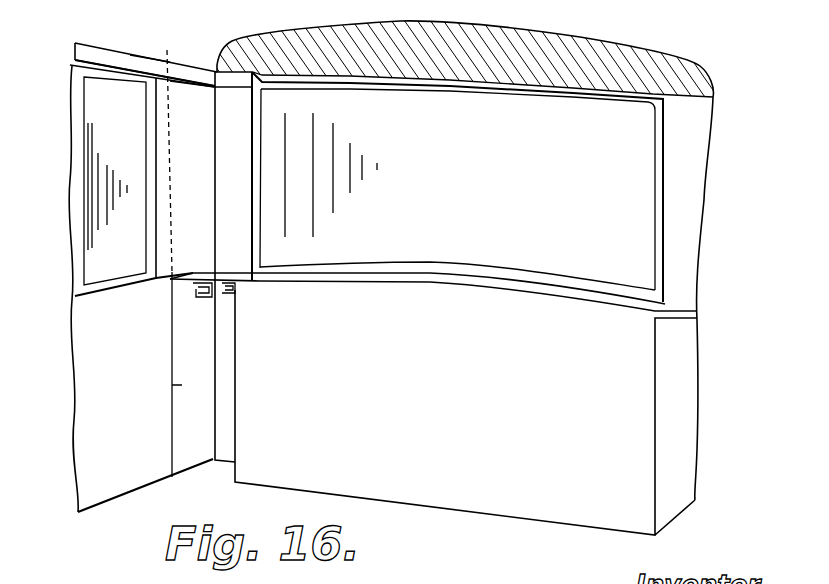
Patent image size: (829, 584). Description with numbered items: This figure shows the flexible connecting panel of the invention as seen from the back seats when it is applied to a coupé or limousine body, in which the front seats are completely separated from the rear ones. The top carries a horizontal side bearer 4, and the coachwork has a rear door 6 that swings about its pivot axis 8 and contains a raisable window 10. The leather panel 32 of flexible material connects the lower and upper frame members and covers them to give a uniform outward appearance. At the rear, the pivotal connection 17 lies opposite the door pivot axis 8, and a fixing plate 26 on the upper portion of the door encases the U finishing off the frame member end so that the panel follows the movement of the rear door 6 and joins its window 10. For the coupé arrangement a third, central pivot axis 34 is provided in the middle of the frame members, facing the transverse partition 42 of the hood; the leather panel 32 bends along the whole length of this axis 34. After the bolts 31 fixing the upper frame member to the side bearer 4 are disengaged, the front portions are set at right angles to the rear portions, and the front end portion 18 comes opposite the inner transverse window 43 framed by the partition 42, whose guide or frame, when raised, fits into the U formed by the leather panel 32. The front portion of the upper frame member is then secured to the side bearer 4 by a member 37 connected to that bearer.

The side bearer 4 is at (114, 62).
The rear door 6 is at (71, 397).
The pivot axis 8 is at (171, 366).
The window 10 is at (100, 142).
The pivot axis 17 is at (169, 149).
The end of frame member 18 is at (182, 45).
The fixing plate 26 is at (149, 38).
The bolts 31 is at (194, 64).
The leather panel 32 is at (235, 217).
The central pivot axis 34 is at (214, 168).
The member 37 is at (234, 66).
The transverse partition 42 is at (466, 412).
The window 43 is at (546, 94).